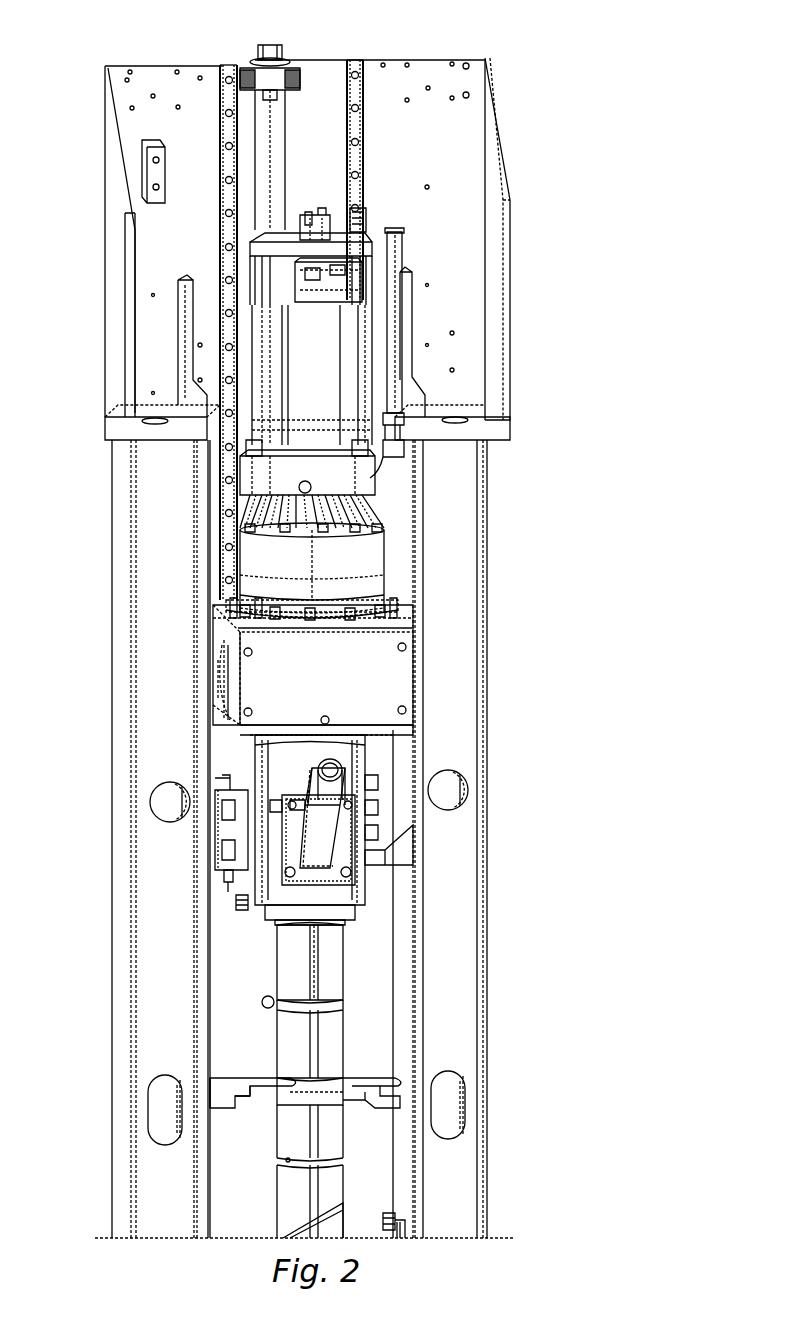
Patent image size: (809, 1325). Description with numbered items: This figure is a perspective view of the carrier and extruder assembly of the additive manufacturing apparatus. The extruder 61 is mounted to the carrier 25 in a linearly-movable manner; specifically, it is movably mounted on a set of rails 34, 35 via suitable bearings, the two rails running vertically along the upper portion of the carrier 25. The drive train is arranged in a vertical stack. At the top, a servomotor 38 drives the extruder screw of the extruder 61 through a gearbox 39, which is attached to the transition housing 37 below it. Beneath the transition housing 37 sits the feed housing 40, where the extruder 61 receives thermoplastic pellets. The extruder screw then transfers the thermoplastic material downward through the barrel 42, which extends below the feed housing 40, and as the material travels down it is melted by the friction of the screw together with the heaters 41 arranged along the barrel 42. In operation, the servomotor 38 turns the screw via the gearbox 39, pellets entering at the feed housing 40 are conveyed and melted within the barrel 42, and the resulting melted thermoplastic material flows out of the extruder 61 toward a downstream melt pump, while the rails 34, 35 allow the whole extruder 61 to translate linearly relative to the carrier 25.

The carrier 25 is at (590, 285).
The rail 34 is at (231, 70).
The rail 35 is at (360, 68).
The transition housing 37 is at (375, 680).
The servomotor 38 is at (320, 362).
The gearbox 39 is at (360, 563).
The feed housing 40 is at (350, 763).
The heaters 41 is at (330, 965).
The barrel 42 is at (340, 1068).
The extruder 61 is at (240, 775).